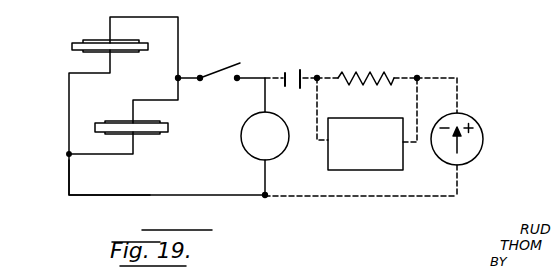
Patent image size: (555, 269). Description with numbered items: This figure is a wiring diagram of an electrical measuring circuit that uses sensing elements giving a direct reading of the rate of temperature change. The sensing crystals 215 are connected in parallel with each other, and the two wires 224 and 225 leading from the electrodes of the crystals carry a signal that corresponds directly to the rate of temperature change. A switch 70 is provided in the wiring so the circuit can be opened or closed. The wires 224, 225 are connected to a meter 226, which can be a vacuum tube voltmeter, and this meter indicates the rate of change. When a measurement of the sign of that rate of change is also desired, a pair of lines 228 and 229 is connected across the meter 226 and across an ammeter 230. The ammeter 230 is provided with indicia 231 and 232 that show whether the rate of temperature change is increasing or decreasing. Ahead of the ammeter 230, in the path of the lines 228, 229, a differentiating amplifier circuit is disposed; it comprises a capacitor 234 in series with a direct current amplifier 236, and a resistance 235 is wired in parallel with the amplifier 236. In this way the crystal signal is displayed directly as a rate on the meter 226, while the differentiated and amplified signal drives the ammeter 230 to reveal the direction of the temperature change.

The crystals 215 is at (78, 42).
The wire 225 is at (136, 196).
The switch 70 is at (216, 72).
The wire 224 is at (254, 75).
The meter 226 is at (274, 158).
The capacitor 234 is at (294, 73).
The resistance 235 is at (361, 80).
The line 228 is at (438, 78).
The direct current amplifier 236 is at (392, 170).
The ammeter 230 is at (478, 158).
The indicia 232 is at (449, 117).
The indicia 231 is at (470, 118).
The line 229 is at (335, 197).